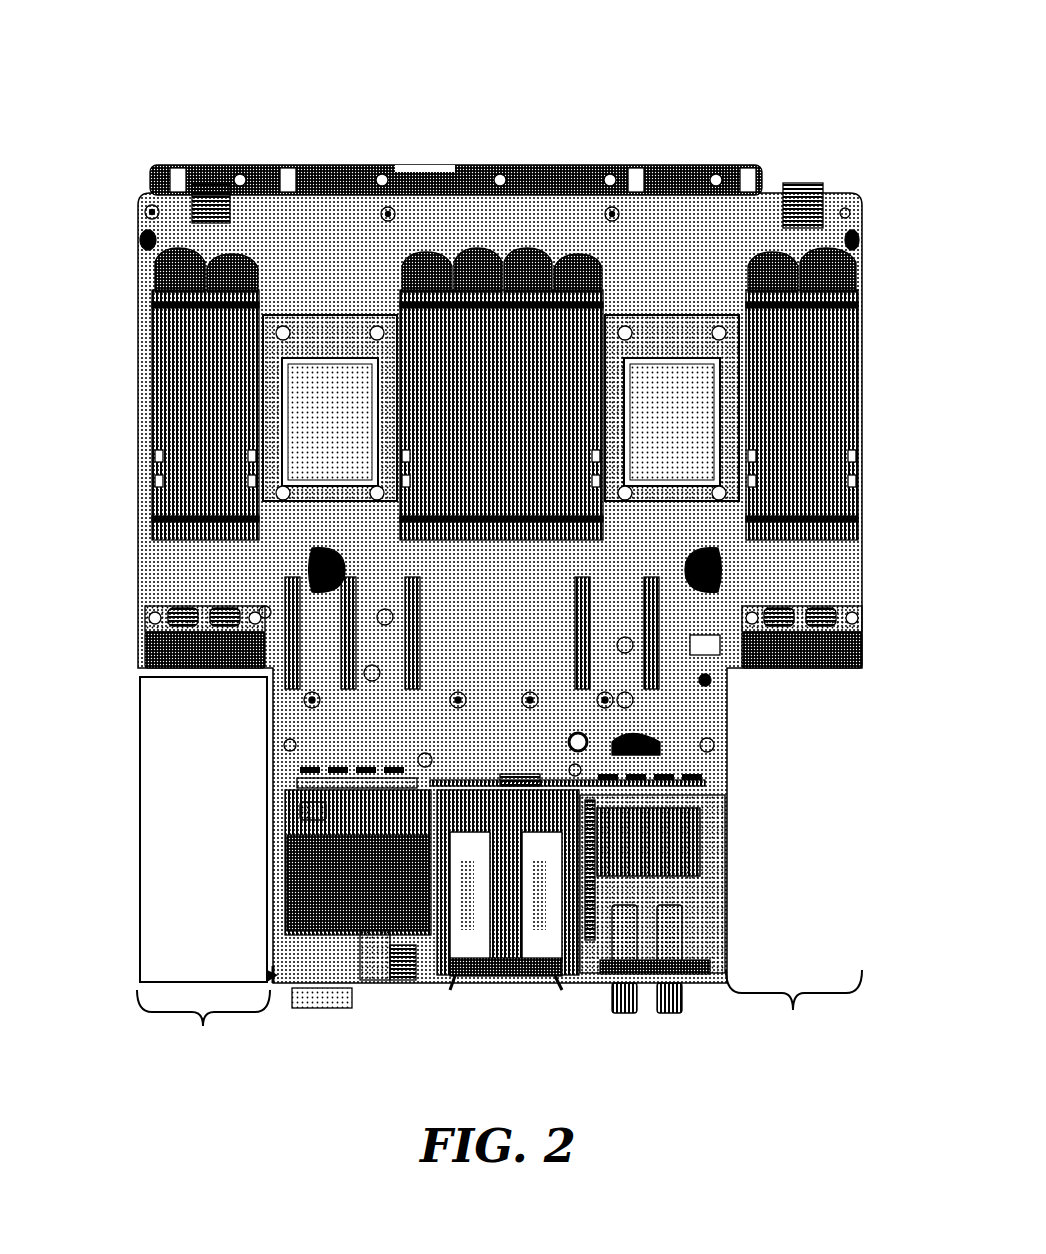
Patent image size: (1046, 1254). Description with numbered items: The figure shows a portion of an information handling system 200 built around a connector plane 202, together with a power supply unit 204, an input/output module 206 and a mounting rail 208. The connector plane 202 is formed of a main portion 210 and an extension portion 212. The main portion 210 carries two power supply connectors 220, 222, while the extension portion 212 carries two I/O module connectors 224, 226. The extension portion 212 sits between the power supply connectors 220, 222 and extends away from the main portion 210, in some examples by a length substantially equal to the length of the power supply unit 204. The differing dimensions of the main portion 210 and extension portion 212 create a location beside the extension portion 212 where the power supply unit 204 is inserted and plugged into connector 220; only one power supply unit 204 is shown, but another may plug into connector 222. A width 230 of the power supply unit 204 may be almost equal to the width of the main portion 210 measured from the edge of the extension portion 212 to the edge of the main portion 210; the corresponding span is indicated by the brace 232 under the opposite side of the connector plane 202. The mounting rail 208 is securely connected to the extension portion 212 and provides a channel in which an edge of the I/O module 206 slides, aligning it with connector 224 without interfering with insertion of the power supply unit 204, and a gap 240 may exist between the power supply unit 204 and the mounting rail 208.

The information handling system 200 is at (802, 48).
The connector plane 202 is at (738, 225).
The power supply unit 204 is at (182, 856).
The input/output module 206 is at (402, 975).
The mounting rail 208 is at (286, 918).
The main portion 210 is at (836, 570).
The extension portion 212 is at (700, 726).
The power supply connector 220 is at (143, 640).
The power supply connector 222 is at (862, 640).
The I/O module connector 224 is at (303, 772).
The I/O module connector 226 is at (698, 788).
The width of power supply unit 230 is at (203, 1028).
The expansion bay 232 is at (794, 1010).
The gap 240 is at (272, 978).